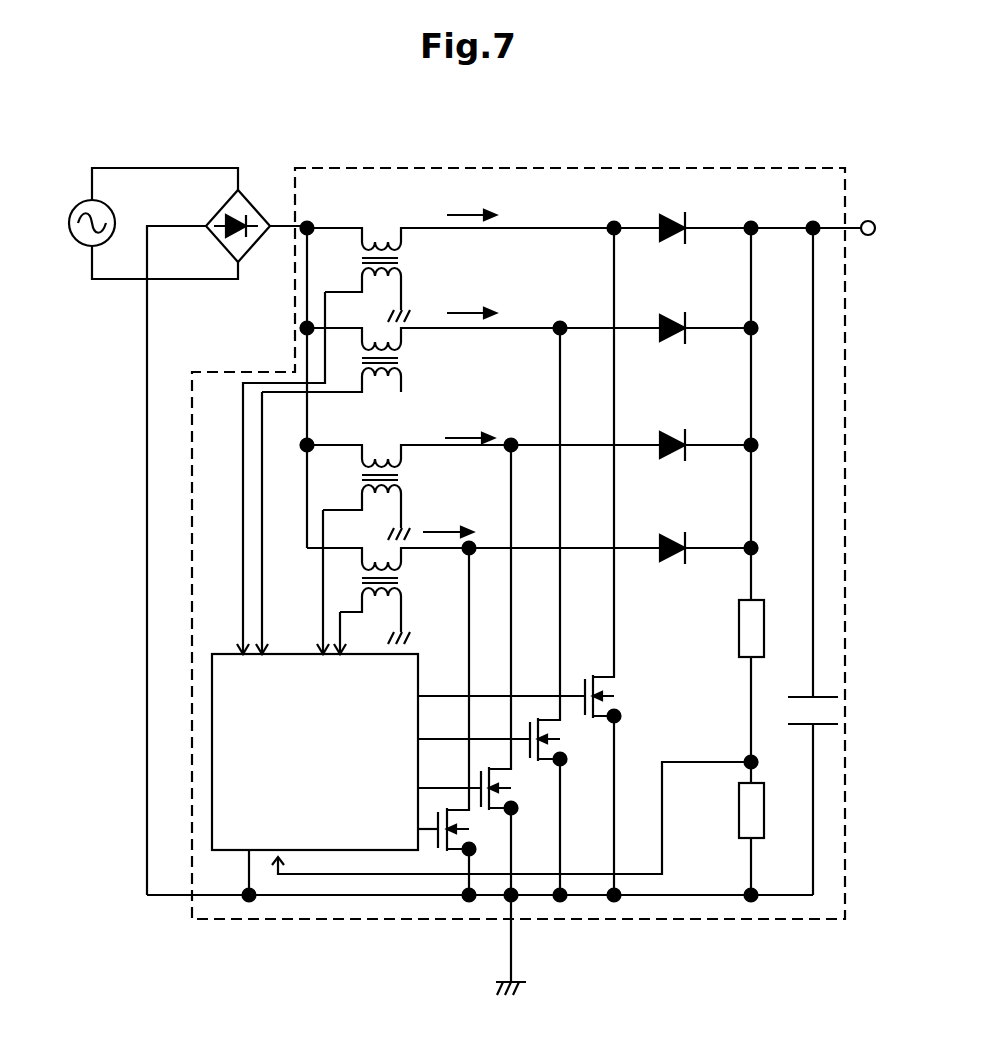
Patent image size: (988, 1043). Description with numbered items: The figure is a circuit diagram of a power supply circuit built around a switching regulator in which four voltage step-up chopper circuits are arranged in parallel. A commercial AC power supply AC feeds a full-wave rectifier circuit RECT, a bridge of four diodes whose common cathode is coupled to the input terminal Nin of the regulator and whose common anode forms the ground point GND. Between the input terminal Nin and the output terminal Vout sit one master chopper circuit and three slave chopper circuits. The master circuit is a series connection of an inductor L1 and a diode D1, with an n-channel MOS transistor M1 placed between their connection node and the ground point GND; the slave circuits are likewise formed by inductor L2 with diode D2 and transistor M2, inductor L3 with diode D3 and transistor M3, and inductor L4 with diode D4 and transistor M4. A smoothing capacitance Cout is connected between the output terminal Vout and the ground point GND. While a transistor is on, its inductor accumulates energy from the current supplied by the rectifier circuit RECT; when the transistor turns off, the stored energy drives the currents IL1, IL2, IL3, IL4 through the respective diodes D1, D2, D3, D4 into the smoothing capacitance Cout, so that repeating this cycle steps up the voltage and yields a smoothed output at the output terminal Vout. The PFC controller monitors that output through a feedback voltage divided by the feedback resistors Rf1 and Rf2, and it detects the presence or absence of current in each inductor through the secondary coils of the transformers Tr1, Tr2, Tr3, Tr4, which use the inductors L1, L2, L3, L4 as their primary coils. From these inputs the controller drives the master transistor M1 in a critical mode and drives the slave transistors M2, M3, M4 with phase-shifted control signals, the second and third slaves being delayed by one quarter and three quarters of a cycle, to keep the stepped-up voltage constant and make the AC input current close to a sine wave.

The AC power supply AC is at (144, 223).
The full-wave rectifier circuit RECT is at (245, 189).
The input terminal Nin is at (310, 226).
The inductor L1 is at (378, 226).
The inductor L2 is at (362, 325).
The inductor L3 is at (364, 442).
The inductor L4 is at (364, 546).
The transformer Tr1 is at (412, 230).
The transformer Tr2 is at (412, 330).
The transformer Tr3 is at (412, 448).
The transformer Tr4 is at (412, 552).
The current IL1 is at (471, 201).
The current IL2 is at (471, 299).
The current IL3 is at (469, 423).
The current IL4 is at (448, 522).
The diode D1 is at (671, 215).
The diode D2 is at (671, 316).
The diode D3 is at (671, 432).
The diode D4 is at (671, 535).
The n-channel MOS transistor M1 is at (537, 559).
The n-channel MOS transistor M2 is at (510, 609).
The switch MOS transistor M3 is at (482, 667).
The switch MOS transistor M4 is at (461, 719).
The feedback resistor Rf1 is at (770, 503).
The feedback resistor Rf2 is at (537, 826).
The smoothing capacitance Cout is at (841, 559).
The output terminal Vout is at (837, 228).
The ground point GND is at (537, 945).